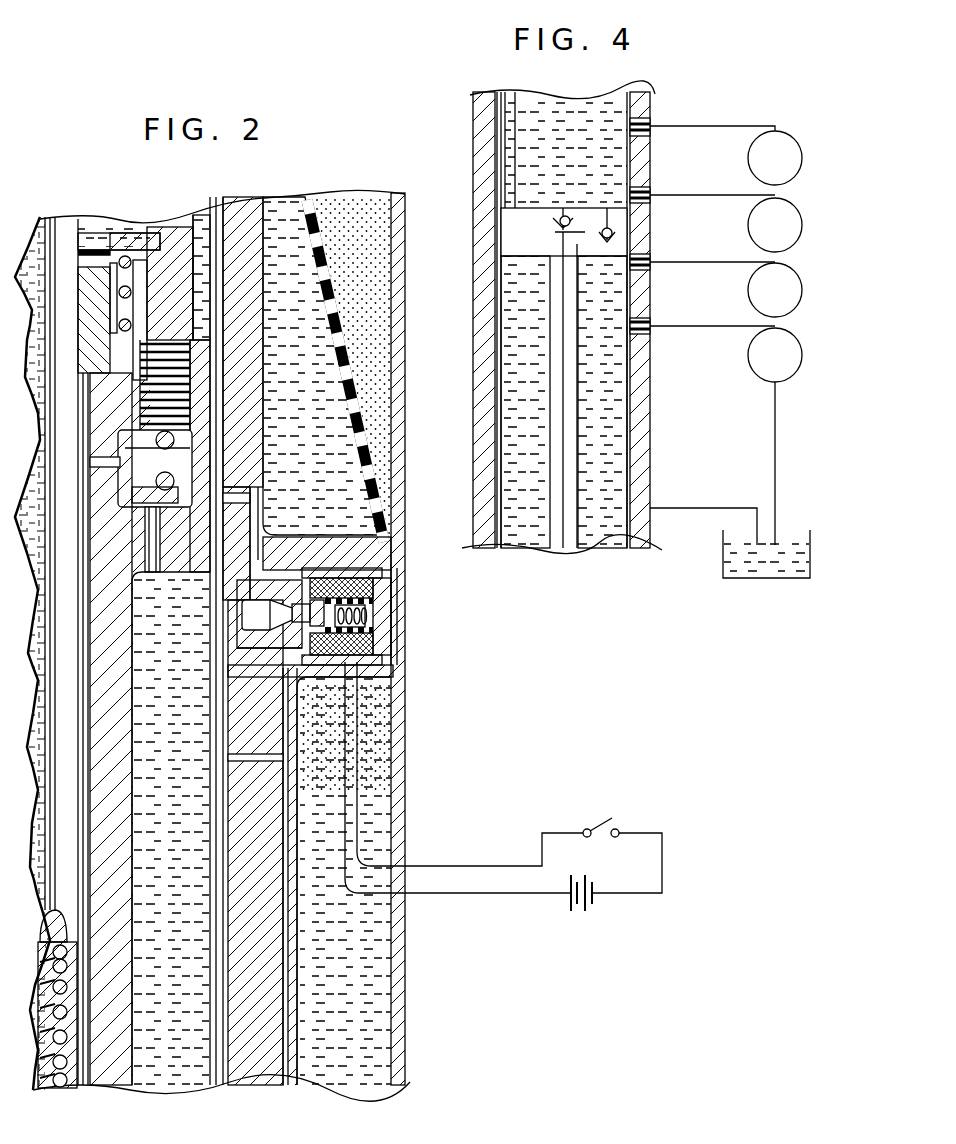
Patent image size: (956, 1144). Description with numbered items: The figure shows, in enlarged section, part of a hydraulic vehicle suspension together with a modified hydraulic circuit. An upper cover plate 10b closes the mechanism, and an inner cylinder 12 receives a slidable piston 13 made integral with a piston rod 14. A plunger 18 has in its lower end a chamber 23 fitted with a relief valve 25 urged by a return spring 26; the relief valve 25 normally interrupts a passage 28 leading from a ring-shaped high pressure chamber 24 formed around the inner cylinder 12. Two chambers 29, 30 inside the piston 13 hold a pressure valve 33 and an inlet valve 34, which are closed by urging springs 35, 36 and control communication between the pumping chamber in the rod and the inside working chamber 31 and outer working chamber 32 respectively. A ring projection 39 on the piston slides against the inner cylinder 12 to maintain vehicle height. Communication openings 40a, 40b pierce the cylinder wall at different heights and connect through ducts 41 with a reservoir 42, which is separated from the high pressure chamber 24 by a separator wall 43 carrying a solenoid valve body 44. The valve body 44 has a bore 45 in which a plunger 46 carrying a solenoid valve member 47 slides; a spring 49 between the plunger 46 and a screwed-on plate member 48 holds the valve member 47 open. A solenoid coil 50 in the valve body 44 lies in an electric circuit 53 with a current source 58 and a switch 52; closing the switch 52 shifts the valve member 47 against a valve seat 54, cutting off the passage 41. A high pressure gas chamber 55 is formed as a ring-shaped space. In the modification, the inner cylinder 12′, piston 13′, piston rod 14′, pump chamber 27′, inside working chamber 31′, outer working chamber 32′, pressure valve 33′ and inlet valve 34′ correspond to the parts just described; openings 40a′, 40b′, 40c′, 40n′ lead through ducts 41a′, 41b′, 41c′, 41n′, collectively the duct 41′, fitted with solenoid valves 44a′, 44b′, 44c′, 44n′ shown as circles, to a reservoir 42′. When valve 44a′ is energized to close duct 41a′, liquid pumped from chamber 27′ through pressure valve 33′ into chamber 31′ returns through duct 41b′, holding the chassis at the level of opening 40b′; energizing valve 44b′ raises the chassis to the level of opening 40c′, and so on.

In FIG. 2, the upper cover plate 10b is at (394, 215).
In FIG. 2, the inner cylinder 12 is at (240, 283).
In FIG. 2, the piston 13 is at (172, 300).
In FIG. 2, the piston rod 14 is at (110, 870).
In FIG. 2, the plunger 18 is at (70, 832).
In FIG. 2, the chamber 23 is at (66, 1023).
In FIG. 2, the high pressure chamber 24 is at (360, 372).
In FIG. 2, the relief valve 25 is at (65, 935).
In FIG. 2, the return spring 26 is at (66, 987).
In FIG. 2, the passage 28 is at (40, 750).
In FIG. 2, the chamber 29 is at (140, 234).
In FIG. 2, the chamber 30 is at (195, 440).
In FIG. 2, the inside working chamber 31 is at (203, 268).
In FIG. 2, the outer working chamber 32 is at (183, 931).
In FIG. 2, the pressure valve 33 is at (97, 262).
In FIG. 2, the inlet valve 34 is at (172, 512).
In FIG. 2, the urging spring 35 is at (195, 350).
In FIG. 2, the urging spring 36 is at (190, 412).
In FIG. 2, the ring projection 39 is at (245, 470).
In FIG. 2, the communication opening 40a is at (240, 497).
In FIG. 2, the communication opening 40b is at (232, 758).
In FIG. 2, the duct 41 is at (255, 515).
In FIG. 2, the reservoir 42 is at (378, 587).
In FIG. 2, the intermediate separator wall 43 is at (355, 555).
In FIG. 2, the valve body 44 is at (332, 575).
In FIG. 2, the bore 45 is at (285, 600).
In FIG. 2, the plunger 46 is at (240, 697).
In FIG. 2, the solenoid valve member 47 is at (252, 615).
In FIG. 2, the plate member 48 is at (385, 612).
In FIG. 2, the spring 49 is at (372, 630).
In FIG. 2, the solenoid coil 50 is at (333, 682).
In FIG. 2, the switch 52 is at (590, 830).
In FIG. 2, the electric circuit 53 is at (620, 895).
In FIG. 2, the valve seat 54 is at (245, 650).
In FIG. 2, the high pressure gas chamber 55 is at (337, 215).
In FIG. 2, the current source 58 is at (571, 905).
In FIG. 4, the inner cylinder 12′ is at (482, 125).
In FIG. 4, the piston 13′ is at (520, 232).
In FIG. 4, the piston rod 14′ is at (560, 370).
In FIG. 4, the pump chamber 27′ is at (570, 310).
In FIG. 4, the inside working chamber 31′ is at (530, 148).
In FIG. 4, the outer working chamber 32′ is at (520, 435).
In FIG. 4, the pressure valve 33′ is at (562, 215).
In FIG. 4, the inlet valve 34′ is at (606, 228).
In FIG. 4, the communication opening 40a′ is at (635, 126).
In FIG. 4, the communication opening 40b′ is at (640, 197).
In FIG. 4, the communication opening 40c′ is at (640, 263).
In FIG. 4, the communication opening 40n′ is at (640, 330).
In FIG. 4, the duct 41a′ is at (720, 126).
In FIG. 4, the duct 41b′ is at (722, 195).
In FIG. 4, the duct 41c′ is at (722, 262).
In FIG. 4, the duct 41n′ is at (705, 326).
In FIG. 4, the duct 41′ is at (775, 400).
In FIG. 4, the reservoir 42′ is at (757, 568).
In FIG. 4, the solenoid valve 44a′ is at (781, 147).
In FIG. 4, the solenoid valve 44b′ is at (782, 217).
In FIG. 4, the solenoid valve 44c′ is at (785, 286).
In FIG. 4, the solenoid valve 44n′ is at (787, 353).